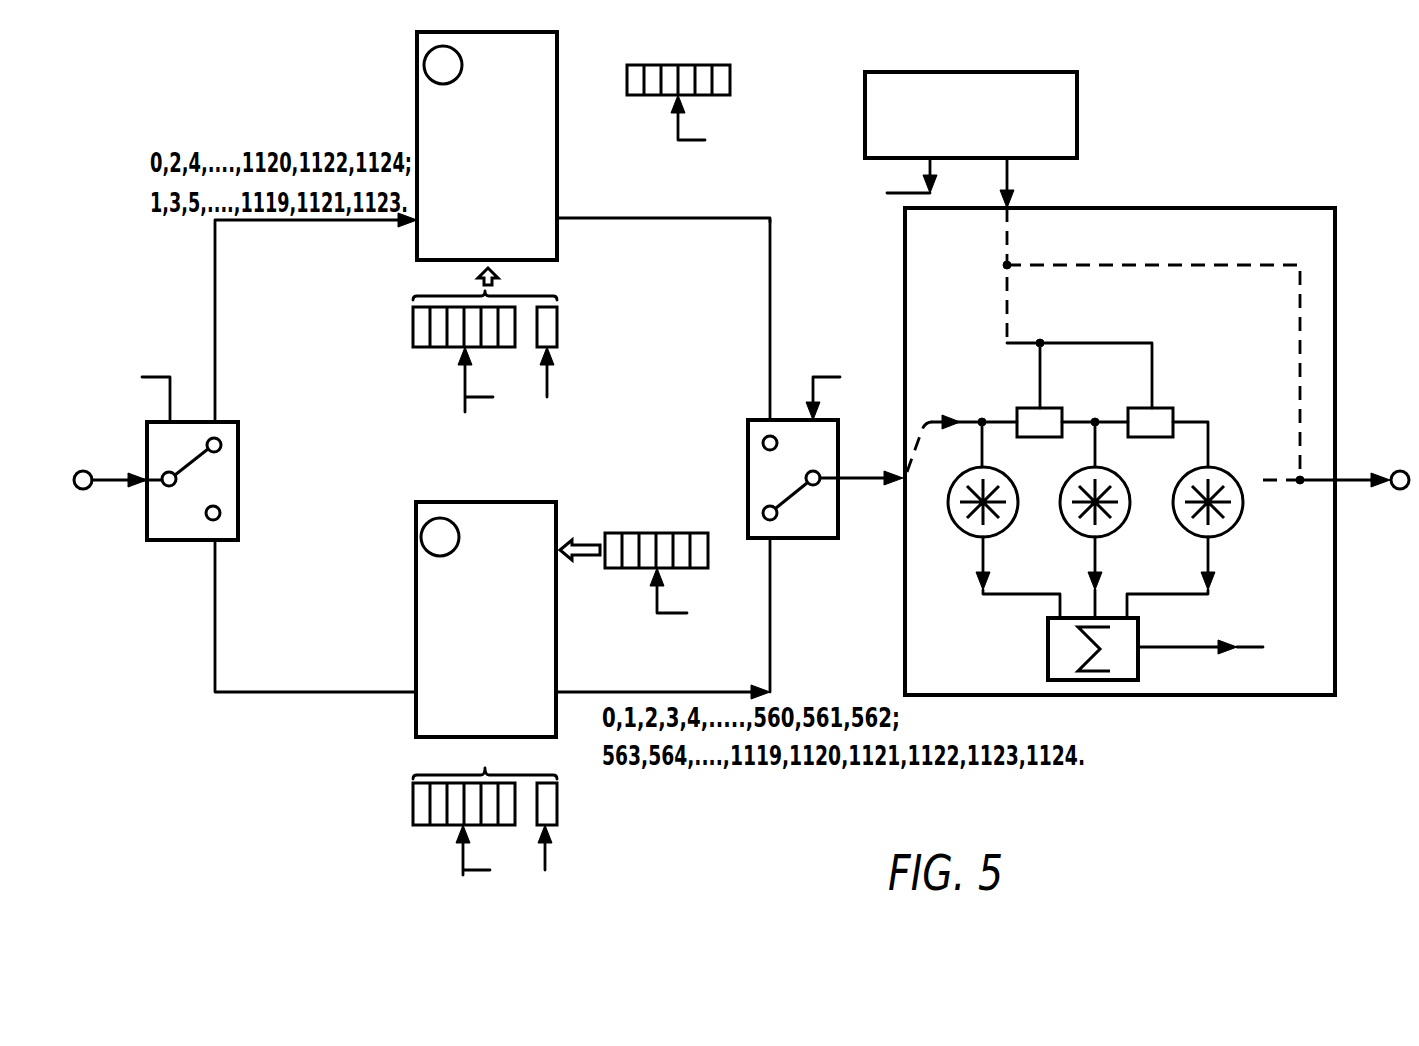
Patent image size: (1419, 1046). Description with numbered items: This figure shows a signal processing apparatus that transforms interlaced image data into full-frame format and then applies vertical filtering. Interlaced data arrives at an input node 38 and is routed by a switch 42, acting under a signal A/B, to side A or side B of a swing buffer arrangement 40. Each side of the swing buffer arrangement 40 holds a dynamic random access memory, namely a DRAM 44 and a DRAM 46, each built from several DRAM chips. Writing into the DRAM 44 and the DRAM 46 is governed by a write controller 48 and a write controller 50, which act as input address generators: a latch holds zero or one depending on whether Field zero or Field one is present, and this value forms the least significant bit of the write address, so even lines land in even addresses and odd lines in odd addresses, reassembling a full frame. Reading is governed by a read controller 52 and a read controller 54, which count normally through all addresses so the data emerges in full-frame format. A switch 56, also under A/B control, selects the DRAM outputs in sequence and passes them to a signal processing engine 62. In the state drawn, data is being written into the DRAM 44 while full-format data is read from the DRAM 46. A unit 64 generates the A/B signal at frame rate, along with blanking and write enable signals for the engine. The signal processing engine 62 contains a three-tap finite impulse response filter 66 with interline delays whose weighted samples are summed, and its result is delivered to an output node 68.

The input node 38 is at (86, 471).
The swing buffer arrangement 40 is at (750, 197).
The switch 42 is at (168, 540).
The dynamic random access memory 44 is at (417, 131).
The dynamic random access memory 46 is at (416, 603).
The write controller 48 is at (567, 338).
The write controller 50 is at (562, 810).
The read controller 52 is at (732, 83).
The read controller 54 is at (708, 553).
The switch 56 is at (813, 538).
The signal processing engine 62 is at (1172, 208).
The unit 64 is at (1077, 135).
The finite impulse response filter 66 is at (1010, 608).
The output node 68 is at (1395, 470).